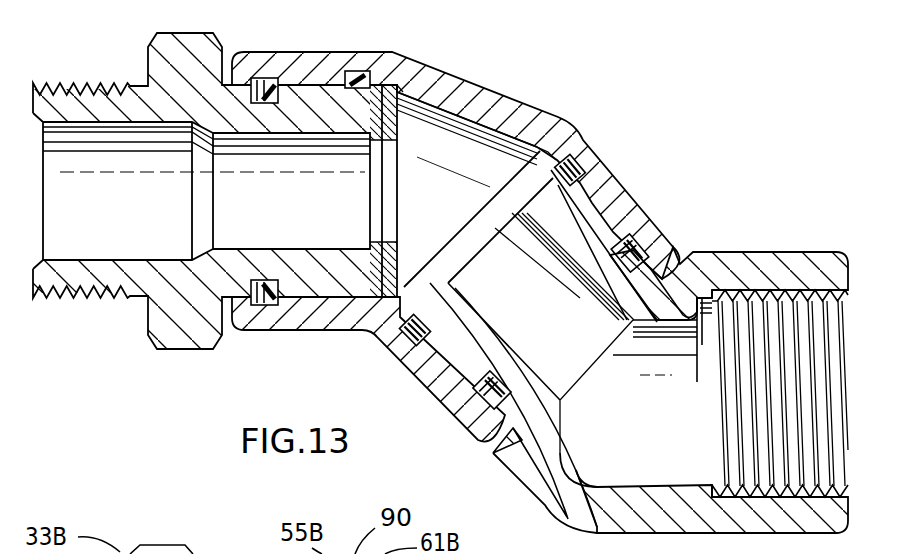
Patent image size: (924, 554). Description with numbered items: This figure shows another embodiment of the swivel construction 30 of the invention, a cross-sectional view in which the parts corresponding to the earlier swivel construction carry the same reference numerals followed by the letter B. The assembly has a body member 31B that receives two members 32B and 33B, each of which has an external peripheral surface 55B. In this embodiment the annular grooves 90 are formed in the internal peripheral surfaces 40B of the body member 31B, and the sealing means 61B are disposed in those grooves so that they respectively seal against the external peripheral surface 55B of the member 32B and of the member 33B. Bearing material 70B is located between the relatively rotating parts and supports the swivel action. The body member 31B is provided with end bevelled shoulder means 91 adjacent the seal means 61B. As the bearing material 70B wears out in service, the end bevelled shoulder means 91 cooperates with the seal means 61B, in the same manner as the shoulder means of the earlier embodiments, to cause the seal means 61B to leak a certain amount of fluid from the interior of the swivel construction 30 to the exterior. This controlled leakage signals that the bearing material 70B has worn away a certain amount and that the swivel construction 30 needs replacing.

The swivel construction 30 is at (537, 63).
The body member 31B is at (452, 77).
The member 32B is at (793, 265).
The member 33B is at (163, 47).
The internal peripheral surfaces 40B is at (343, 100).
The external peripheral surface 55B is at (327, 88).
The sealing means 61B is at (387, 82).
The bearing material 70B is at (268, 104).
The annular grooves 90 is at (354, 72).
The end bevelled shoulder means 91 is at (401, 63).